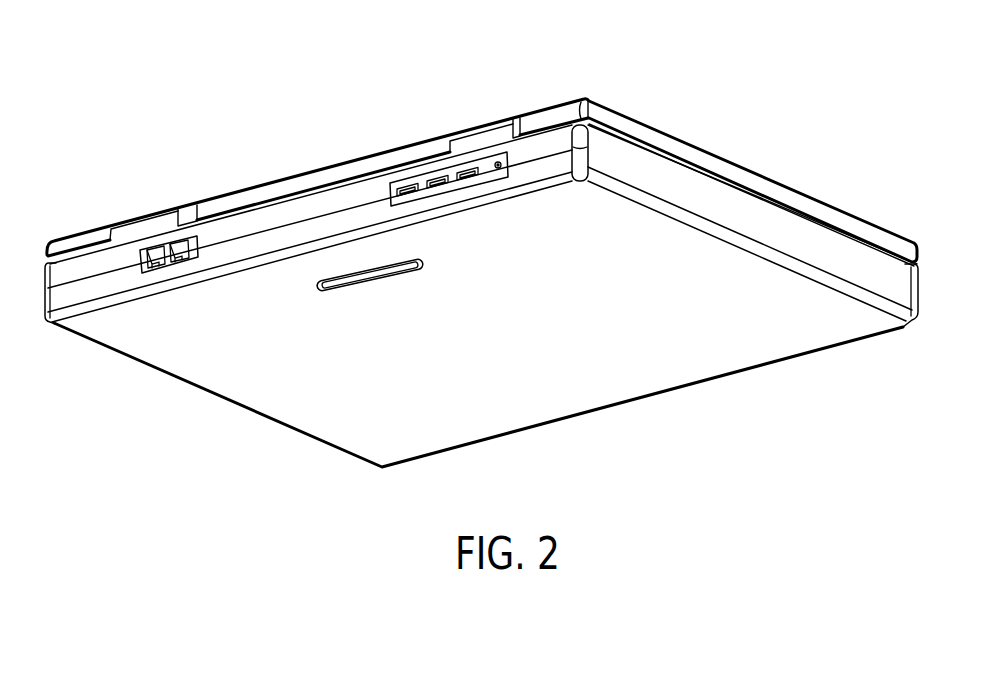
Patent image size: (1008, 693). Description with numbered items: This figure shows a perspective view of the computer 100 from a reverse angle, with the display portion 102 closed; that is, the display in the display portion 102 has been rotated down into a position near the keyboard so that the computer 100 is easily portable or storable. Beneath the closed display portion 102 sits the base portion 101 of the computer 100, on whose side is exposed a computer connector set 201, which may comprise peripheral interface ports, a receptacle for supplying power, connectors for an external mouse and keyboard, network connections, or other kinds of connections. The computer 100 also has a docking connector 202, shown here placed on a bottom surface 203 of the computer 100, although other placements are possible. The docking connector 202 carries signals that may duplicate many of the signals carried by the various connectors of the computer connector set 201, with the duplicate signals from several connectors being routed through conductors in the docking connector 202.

The computer 100 is at (405, 37).
The base 101 is at (207, 382).
The display portion 102 is at (741, 178).
The computer connector set 201 is at (420, 178).
The docking connector 202 is at (375, 283).
The bottom surface 203 is at (578, 368).